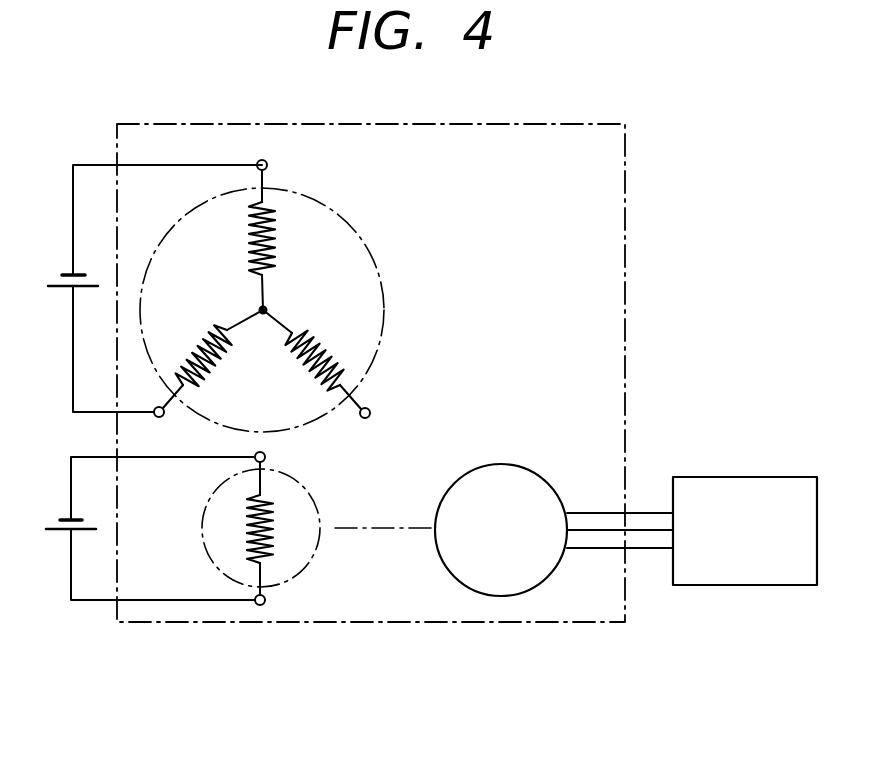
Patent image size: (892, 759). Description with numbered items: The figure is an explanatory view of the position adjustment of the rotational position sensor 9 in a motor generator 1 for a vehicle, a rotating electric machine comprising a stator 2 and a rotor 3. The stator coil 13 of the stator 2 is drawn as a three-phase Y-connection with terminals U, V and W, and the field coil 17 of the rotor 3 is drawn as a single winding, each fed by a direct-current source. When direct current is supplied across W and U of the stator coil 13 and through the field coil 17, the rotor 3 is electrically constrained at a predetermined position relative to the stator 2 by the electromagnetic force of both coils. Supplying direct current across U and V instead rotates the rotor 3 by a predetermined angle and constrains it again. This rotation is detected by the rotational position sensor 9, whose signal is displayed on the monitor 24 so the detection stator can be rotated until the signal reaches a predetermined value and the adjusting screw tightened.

The motor generator 1 is at (598, 123).
The stator 2 is at (293, 301).
The rotor 3 is at (297, 528).
The rotational position sensor 9 is at (488, 578).
The stator coil 13 is at (228, 330).
The field coil 17 is at (273, 543).
The monitor 24 is at (727, 495).